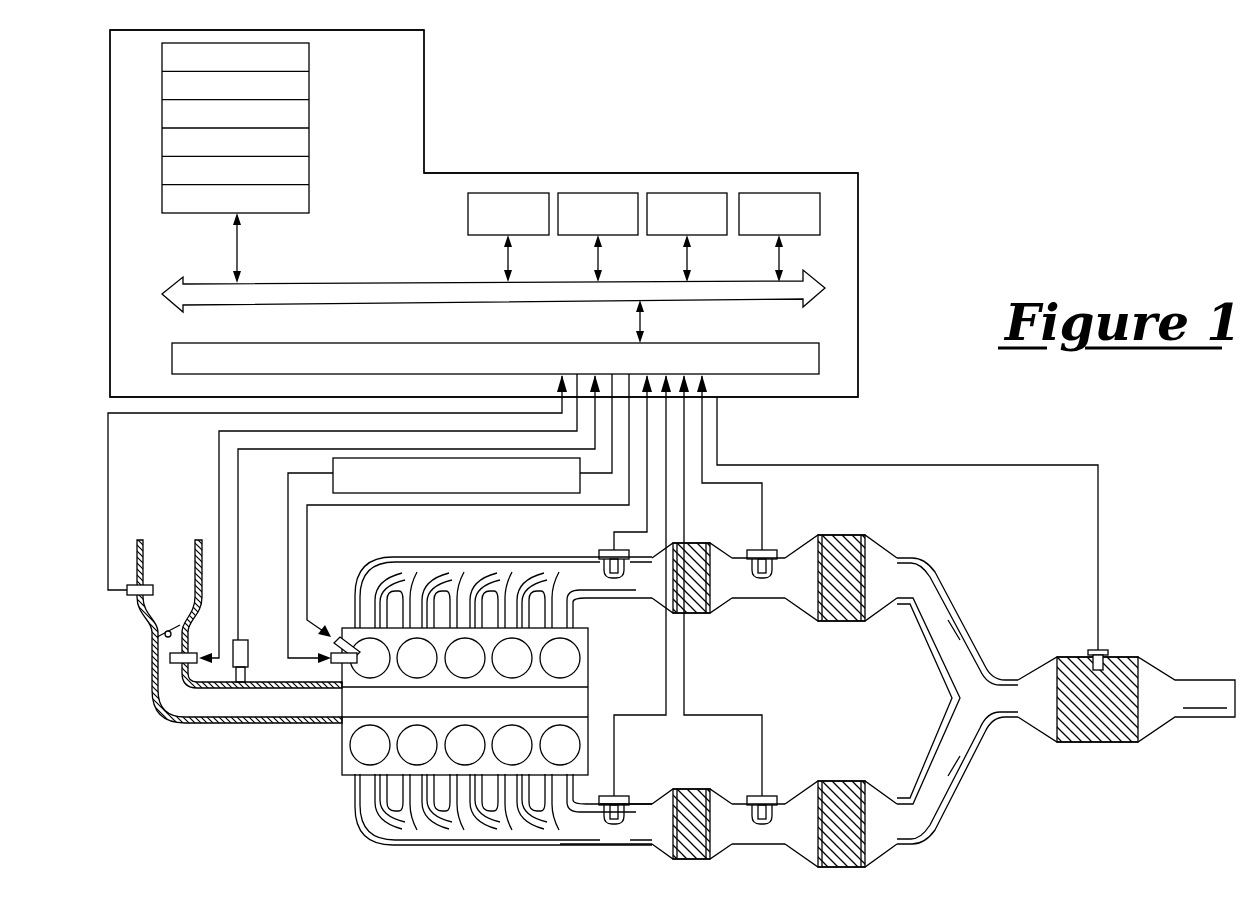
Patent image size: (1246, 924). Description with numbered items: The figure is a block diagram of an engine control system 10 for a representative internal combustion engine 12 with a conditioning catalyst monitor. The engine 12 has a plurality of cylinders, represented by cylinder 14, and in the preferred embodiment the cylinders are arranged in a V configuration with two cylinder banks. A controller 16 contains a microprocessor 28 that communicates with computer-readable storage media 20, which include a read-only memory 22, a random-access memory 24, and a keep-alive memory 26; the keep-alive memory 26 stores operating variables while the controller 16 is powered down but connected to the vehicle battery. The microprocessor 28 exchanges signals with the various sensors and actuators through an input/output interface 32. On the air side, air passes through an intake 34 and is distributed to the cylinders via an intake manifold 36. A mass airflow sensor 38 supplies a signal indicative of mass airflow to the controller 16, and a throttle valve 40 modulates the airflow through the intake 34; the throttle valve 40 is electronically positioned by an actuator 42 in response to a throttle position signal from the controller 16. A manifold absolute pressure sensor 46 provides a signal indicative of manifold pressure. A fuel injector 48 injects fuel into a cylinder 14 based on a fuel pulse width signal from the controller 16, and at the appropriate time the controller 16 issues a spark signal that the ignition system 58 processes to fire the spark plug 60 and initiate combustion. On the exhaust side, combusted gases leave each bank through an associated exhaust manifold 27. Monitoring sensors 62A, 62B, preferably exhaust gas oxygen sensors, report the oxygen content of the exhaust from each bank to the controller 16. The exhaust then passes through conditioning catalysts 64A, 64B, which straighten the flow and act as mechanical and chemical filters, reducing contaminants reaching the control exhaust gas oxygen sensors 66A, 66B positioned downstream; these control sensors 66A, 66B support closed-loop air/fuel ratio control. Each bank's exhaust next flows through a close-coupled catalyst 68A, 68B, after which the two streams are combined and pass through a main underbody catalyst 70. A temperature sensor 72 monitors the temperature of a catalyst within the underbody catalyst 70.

The engine control system 10 is at (846, 147).
The internal combustion engine 12 is at (594, 652).
The cylinder 14 is at (347, 748).
The controller 16 is at (858, 305).
The computer-readable storage media 20 is at (446, 141).
The read-only memory (ROM) 22 is at (497, 193).
The random-access memory (RAM) 24 is at (585, 193).
The keep-alive memory (KAM) 26 is at (677, 193).
The exhaust manifold 27 is at (362, 830).
The microprocessor 28 is at (767, 193).
The input/output (I/O) interface 32 is at (819, 358).
The intake 34 is at (177, 566).
The intake manifold 36 is at (565, 702).
The mass airflow sensor 38 is at (127, 595).
The throttle valve 40 is at (163, 635).
The actuator 42 is at (172, 665).
The manifold absolute pressure sensor 46 is at (242, 640).
The fuel injector 48 is at (338, 638).
The ignition system 58 is at (333, 466).
The spark plug 60 is at (337, 667).
The monitoring sensor 62A is at (598, 548).
The monitoring sensor 62B is at (630, 795).
The conditioning catalyst 64A is at (700, 547).
The conditioning catalyst 64B is at (700, 790).
The control exhaust gas oxygen sensor 66A is at (777, 548).
The control exhaust gas oxygen sensor 66B is at (778, 795).
The close-coupled catalyst 68A is at (848, 620).
The close-coupled catalyst 68B is at (846, 781).
The main underbody catalyst 70 is at (1100, 745).
The temperature sensor 72 is at (1108, 651).